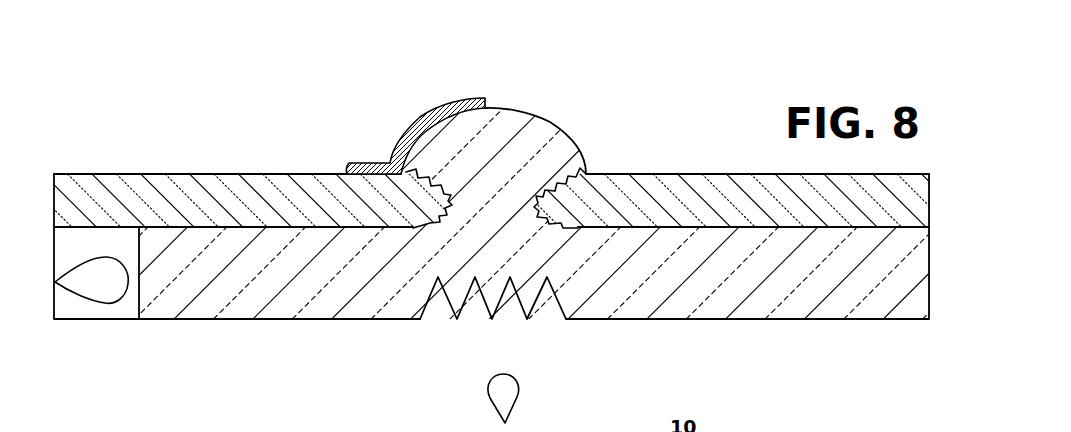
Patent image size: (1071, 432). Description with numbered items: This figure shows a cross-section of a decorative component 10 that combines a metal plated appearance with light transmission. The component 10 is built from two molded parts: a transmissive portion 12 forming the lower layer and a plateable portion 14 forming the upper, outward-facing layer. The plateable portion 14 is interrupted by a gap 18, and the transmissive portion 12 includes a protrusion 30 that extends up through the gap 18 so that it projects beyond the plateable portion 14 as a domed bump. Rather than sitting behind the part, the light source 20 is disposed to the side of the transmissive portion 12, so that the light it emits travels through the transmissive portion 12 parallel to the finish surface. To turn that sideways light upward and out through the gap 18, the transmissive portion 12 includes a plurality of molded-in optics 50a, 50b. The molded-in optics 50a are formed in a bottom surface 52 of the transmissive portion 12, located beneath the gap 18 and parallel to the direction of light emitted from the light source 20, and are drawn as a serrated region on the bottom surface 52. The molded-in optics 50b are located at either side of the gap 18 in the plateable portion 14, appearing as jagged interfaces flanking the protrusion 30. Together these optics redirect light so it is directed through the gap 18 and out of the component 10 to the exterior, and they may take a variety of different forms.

The decorative component 10 is at (412, 98).
The transmissive portion 12 is at (207, 302).
The plateable portion 14 is at (158, 187).
The gap 18 is at (467, 204).
The light source 20 is at (100, 290).
The protrusion 30 is at (503, 111).
The molded-in optics 50a is at (486, 288).
The molded-in optics 50b is at (448, 196).
The bottom surface 52 is at (472, 300).